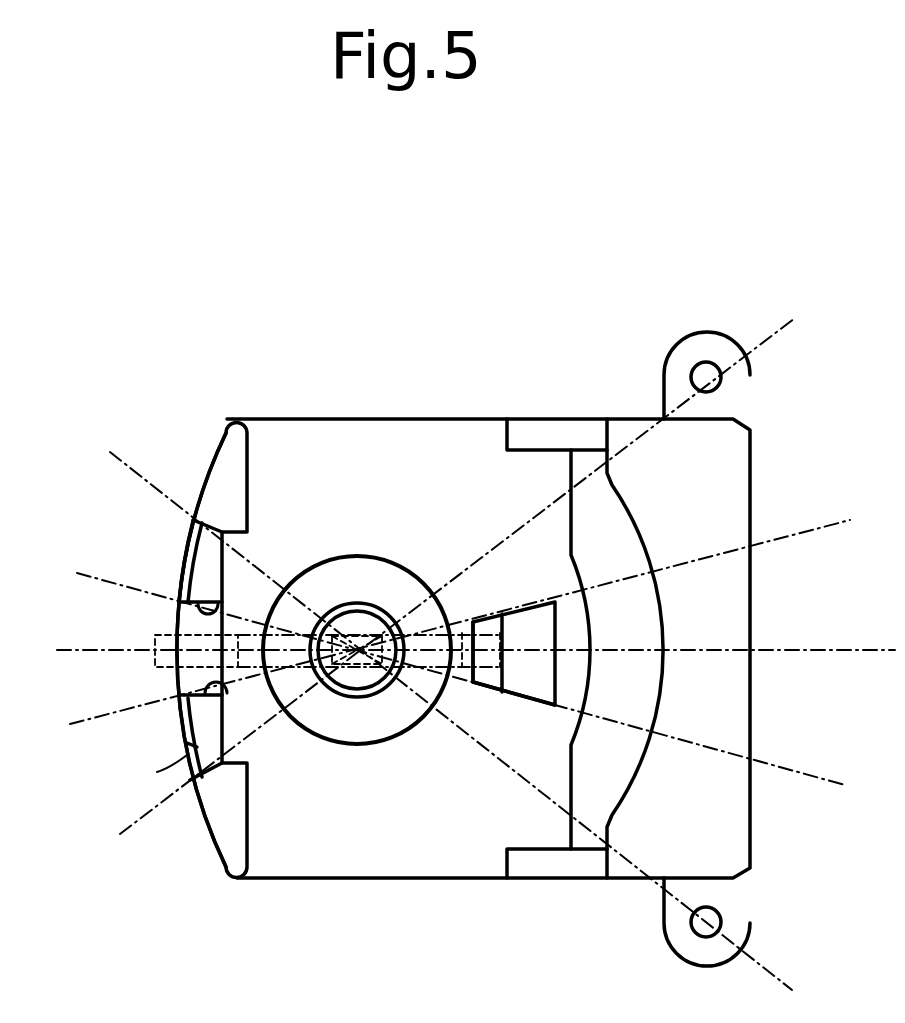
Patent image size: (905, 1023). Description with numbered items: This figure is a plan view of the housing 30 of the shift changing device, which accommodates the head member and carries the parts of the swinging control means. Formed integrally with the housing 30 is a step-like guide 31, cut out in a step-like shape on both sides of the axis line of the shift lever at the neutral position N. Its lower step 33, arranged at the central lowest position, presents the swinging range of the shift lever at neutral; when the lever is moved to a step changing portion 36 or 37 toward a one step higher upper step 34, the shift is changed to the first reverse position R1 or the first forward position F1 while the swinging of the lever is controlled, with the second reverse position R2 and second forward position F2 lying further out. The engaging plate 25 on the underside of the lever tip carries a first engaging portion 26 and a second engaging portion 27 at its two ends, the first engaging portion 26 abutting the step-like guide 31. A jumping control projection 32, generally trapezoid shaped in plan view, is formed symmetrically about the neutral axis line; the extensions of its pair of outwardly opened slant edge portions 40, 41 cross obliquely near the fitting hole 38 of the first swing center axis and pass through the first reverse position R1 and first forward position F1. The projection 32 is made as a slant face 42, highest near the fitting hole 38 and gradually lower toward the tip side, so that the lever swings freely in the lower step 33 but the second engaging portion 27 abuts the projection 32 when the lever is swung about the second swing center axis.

The housing 30 is at (376, 418).
The step-like guide 31 is at (168, 723).
The lower step 33 is at (183, 622).
The upper step 34 is at (193, 563).
The step changing portion 36 is at (216, 612).
The step changing portion 37 is at (228, 688).
The first engaging portion 26 is at (155, 669).
The engaging plate 25 is at (427, 665).
The fitting hole 38 is at (358, 680).
The second engaging portion 27 is at (487, 690).
The jumping control projection 32 is at (493, 612).
The slant edge portion 40 is at (517, 607).
The slant edge portion 41 is at (518, 697).
The slant face 42 is at (547, 620).
The neutral position N is at (464, 650).
The first reverse position R1 is at (441, 666).
The second reverse position R2 is at (432, 707).
The first forward position F1 is at (442, 632).
The second forward position F2 is at (440, 593).